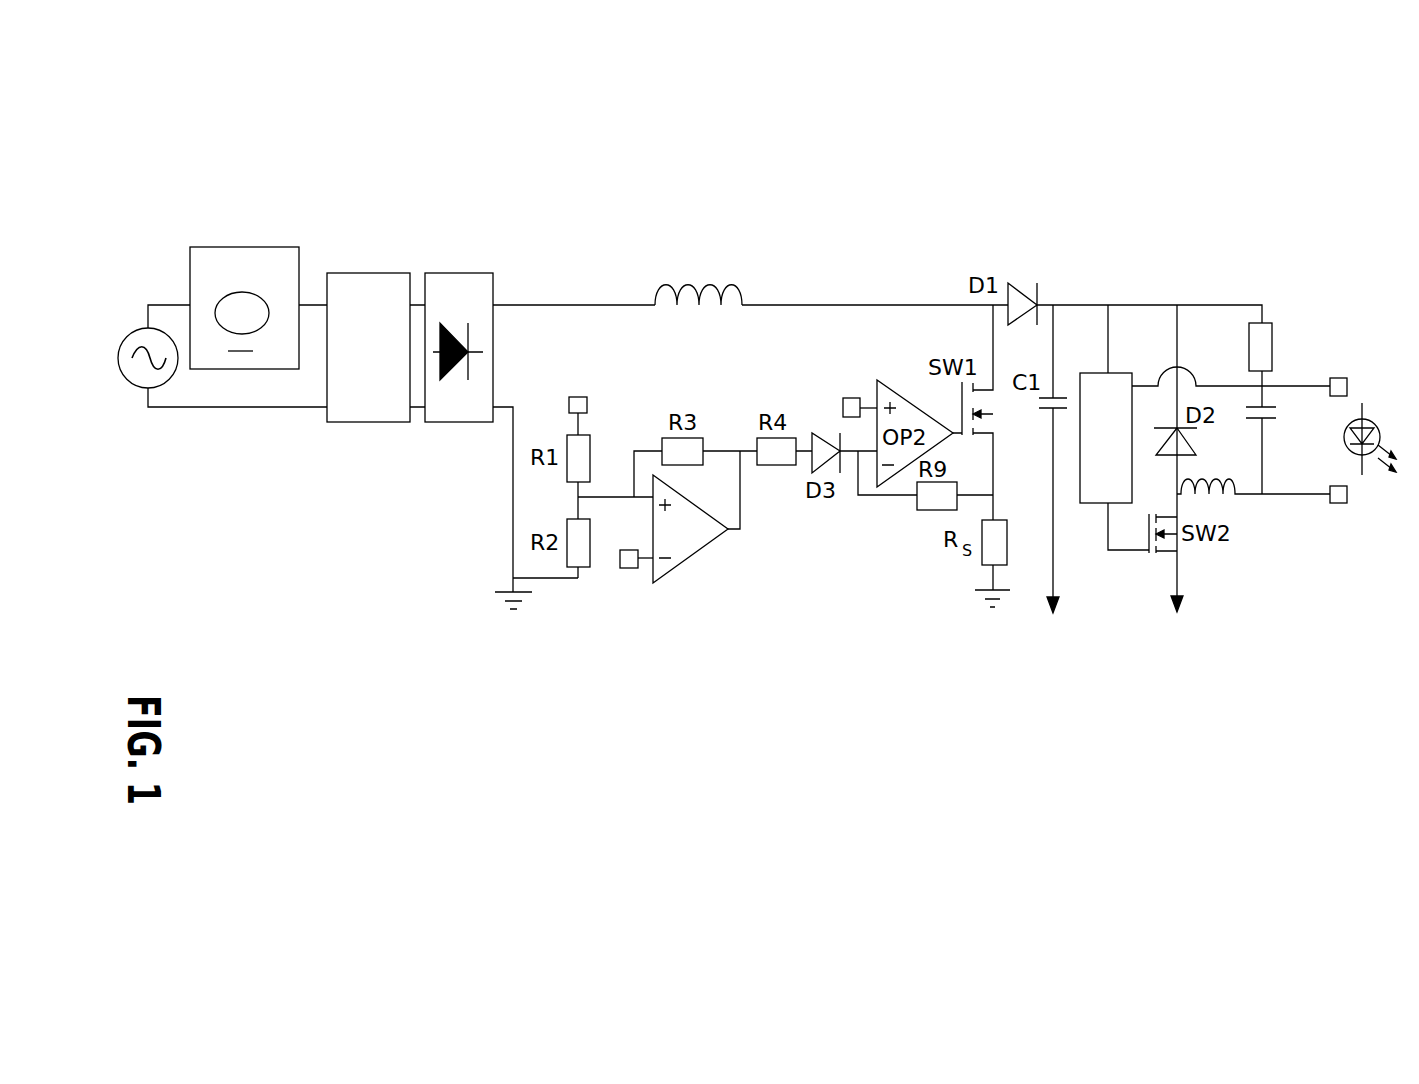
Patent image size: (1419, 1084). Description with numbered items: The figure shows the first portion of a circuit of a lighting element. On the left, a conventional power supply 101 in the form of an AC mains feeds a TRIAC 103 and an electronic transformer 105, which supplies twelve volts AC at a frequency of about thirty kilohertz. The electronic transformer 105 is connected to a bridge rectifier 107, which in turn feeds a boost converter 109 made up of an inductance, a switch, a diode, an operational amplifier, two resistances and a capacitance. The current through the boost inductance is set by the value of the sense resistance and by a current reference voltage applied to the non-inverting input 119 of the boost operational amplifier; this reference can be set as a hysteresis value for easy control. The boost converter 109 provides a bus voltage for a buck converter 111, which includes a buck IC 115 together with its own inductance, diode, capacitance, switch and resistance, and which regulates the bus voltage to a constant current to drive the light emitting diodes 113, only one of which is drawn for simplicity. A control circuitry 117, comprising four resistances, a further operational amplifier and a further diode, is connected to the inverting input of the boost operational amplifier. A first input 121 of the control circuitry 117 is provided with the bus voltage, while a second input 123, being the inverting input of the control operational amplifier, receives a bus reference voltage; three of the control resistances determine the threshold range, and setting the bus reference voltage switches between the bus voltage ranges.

The power supply 101 is at (135, 390).
The TRIAC 103 is at (245, 247).
The electronic transformer 105 is at (357, 273).
The bridge rectifier 107 is at (452, 273).
The boost converter 109 is at (816, 275).
The buck converter 111 is at (1147, 281).
The light emitting diodes 113 is at (1383, 414).
The buck IC 115 is at (1094, 503).
The control circuitry 117 is at (698, 574).
The non-inverting input 119 is at (852, 398).
The first input 121 is at (579, 397).
The second input 123 is at (628, 568).